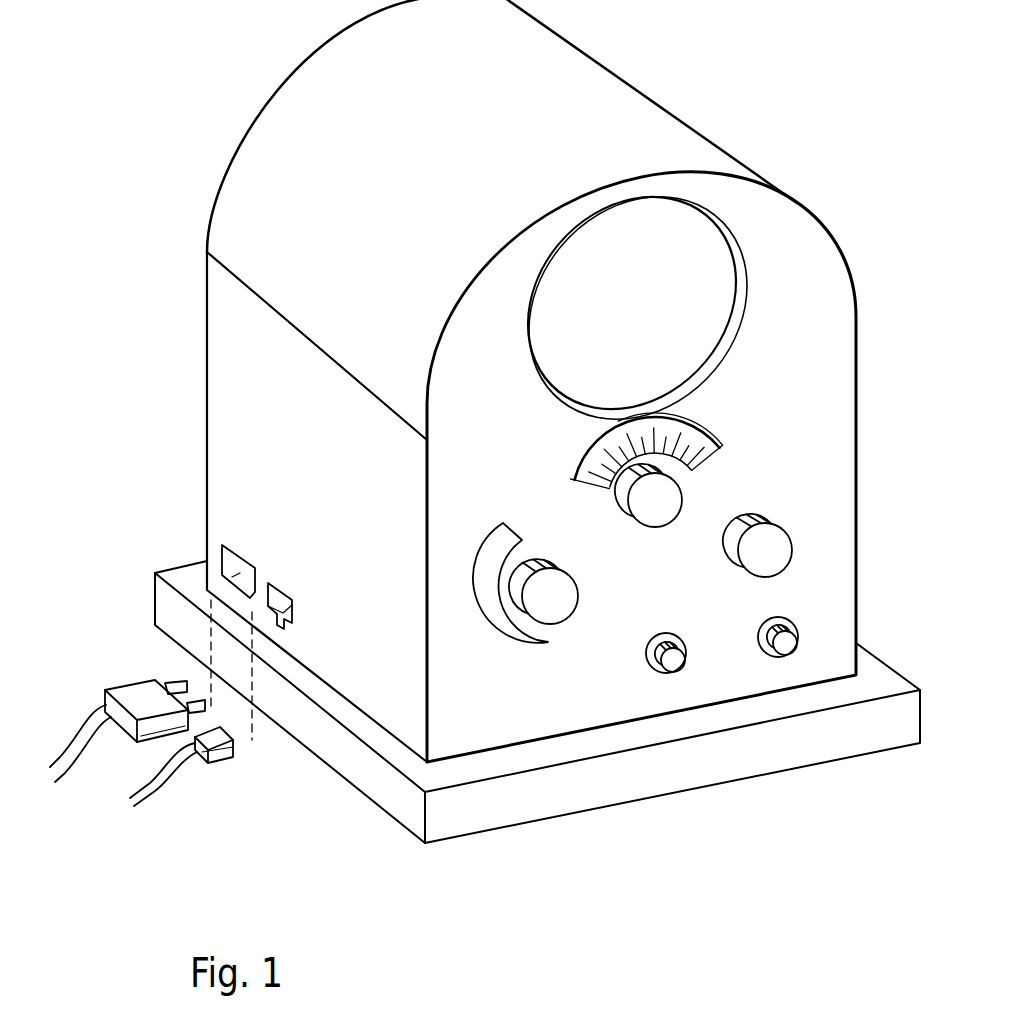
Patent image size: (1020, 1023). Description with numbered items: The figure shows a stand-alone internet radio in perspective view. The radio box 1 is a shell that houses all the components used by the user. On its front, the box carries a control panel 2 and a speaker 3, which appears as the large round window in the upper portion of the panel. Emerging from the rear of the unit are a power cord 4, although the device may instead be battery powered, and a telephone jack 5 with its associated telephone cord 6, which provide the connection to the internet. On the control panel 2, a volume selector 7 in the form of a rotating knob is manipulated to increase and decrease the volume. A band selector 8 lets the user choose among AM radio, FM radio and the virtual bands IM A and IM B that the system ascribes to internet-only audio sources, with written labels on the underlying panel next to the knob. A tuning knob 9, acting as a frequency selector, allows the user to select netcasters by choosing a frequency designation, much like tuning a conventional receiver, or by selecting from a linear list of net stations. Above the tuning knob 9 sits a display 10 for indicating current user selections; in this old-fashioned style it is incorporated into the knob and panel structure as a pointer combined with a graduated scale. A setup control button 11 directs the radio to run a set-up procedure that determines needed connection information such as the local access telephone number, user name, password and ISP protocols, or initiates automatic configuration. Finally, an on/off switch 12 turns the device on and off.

The radio box 1 is at (220, 177).
The control panel 2 is at (793, 363).
The speaker 3 is at (747, 284).
The power cord 4 is at (141, 678).
The telephone jack 5 is at (293, 607).
The telephone cord 6 is at (228, 762).
The volume selector 7 is at (552, 623).
The band selector 8 is at (793, 552).
The tuning knob 9 is at (683, 487).
The display 10 is at (720, 438).
The setup control button 11 is at (687, 658).
The on/off switch 12 is at (800, 642).